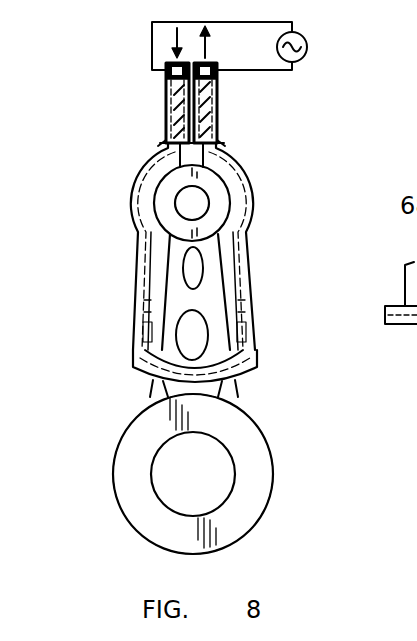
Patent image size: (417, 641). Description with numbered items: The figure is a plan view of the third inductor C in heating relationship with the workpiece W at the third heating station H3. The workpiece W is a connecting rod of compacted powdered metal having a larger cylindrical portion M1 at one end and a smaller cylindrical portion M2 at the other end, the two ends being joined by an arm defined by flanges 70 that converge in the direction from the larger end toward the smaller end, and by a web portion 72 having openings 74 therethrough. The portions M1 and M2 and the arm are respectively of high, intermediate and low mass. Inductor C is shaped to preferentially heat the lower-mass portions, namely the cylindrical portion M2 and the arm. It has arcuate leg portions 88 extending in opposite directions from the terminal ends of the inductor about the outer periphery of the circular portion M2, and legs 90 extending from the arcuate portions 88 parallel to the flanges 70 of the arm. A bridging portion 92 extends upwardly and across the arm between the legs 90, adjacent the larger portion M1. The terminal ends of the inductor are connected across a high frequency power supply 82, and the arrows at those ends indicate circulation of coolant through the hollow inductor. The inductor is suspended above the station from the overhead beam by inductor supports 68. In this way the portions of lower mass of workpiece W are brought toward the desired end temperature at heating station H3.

The high frequency power supply 82 is at (309, 44).
The inductor supports 68 is at (222, 103).
The inductor C is at (130, 172).
The arcuate leg portions 88 is at (136, 205).
The cylindrical portion M2 is at (215, 184).
The heating station H3 is at (110, 253).
The web portion 72 is at (200, 300).
The legs 90 is at (143, 288).
The flanges 70 is at (132, 321).
The openings 74 is at (205, 352).
The bridging portion 92 is at (150, 384).
The workpiece W is at (270, 410).
The cylindrical portion M1 is at (266, 486).